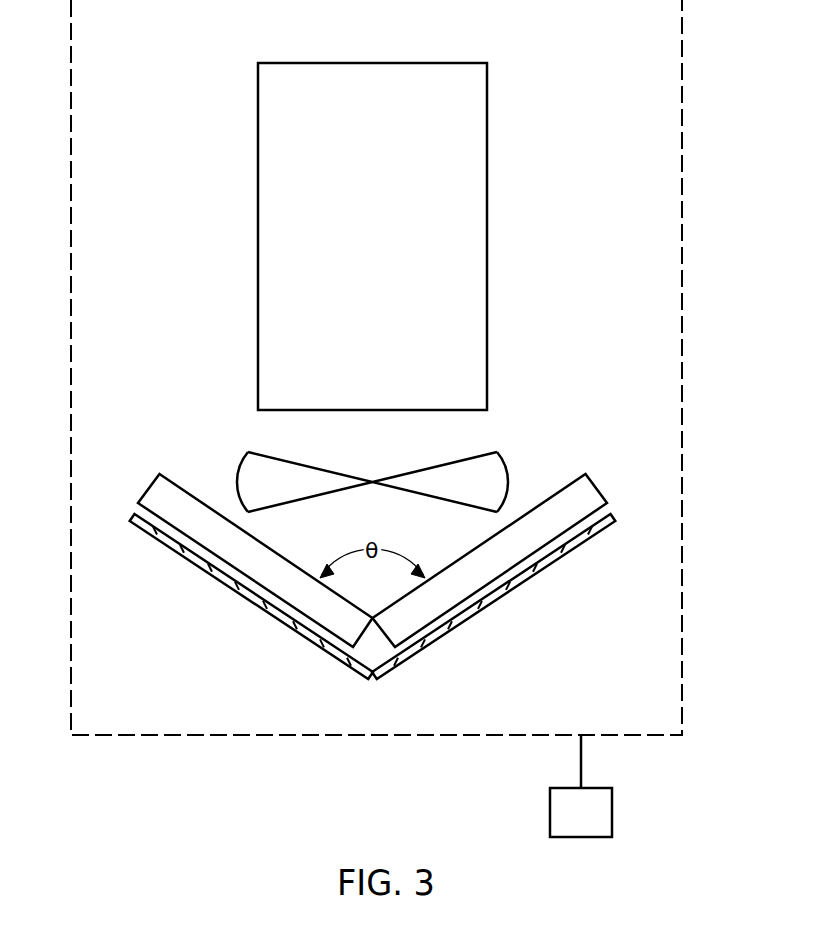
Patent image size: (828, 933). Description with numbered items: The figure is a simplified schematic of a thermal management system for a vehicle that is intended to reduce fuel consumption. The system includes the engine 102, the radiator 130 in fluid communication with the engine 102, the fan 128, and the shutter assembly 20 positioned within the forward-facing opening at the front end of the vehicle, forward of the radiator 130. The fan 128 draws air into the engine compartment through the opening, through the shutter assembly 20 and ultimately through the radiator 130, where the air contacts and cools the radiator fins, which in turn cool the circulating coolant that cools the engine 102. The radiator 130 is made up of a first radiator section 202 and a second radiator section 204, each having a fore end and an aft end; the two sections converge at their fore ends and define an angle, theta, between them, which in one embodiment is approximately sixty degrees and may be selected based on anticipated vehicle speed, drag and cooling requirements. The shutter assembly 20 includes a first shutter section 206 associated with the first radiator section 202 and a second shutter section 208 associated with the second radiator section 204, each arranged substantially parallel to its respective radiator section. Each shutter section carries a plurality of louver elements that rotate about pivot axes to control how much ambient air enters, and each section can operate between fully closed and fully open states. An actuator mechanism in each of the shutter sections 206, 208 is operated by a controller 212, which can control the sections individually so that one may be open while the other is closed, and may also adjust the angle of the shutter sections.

The shutter assembly 20 is at (567, 561).
The engine 102 is at (403, 75).
The fan 128 is at (497, 470).
The radiator 130 is at (518, 488).
The first radiator section 202 is at (158, 492).
The second radiator section 204 is at (588, 497).
The first shutter section 206 is at (251, 603).
The second shutter section 208 is at (493, 600).
The controller 212 is at (612, 807).